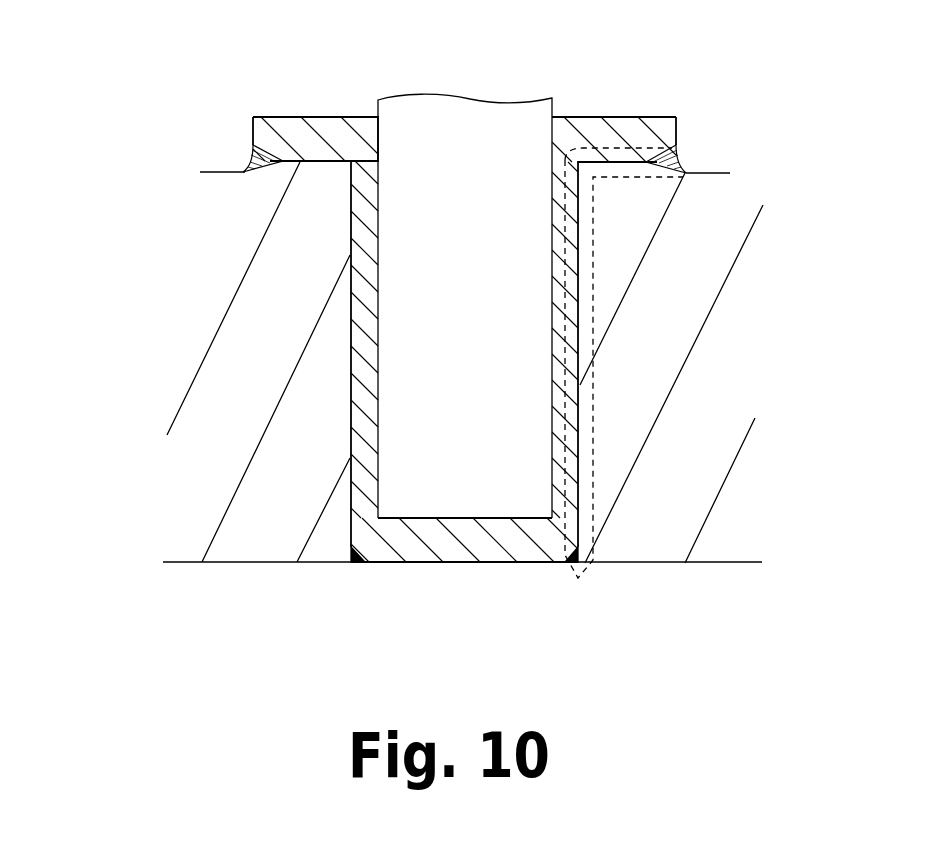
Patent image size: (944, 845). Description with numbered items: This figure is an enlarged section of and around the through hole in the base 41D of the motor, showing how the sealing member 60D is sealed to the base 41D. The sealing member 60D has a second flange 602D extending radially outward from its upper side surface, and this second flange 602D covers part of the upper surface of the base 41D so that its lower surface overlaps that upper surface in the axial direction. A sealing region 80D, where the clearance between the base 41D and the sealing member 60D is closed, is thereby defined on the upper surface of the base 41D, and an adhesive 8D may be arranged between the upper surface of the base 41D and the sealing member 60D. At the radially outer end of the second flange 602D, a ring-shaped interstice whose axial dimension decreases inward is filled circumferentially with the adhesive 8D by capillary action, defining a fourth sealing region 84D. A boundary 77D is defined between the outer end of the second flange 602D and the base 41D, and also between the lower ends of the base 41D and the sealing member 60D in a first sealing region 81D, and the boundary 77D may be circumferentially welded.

The second flange 602D is at (300, 148).
The boundary 77D is at (240, 157).
The fourth sealing region 84D is at (697, 155).
The adhesive 8D is at (695, 163).
The sealing region 80D is at (633, 180).
The first sealing region 81D is at (583, 540).
The base 41D is at (288, 515).
The sealing member 60D is at (512, 540).